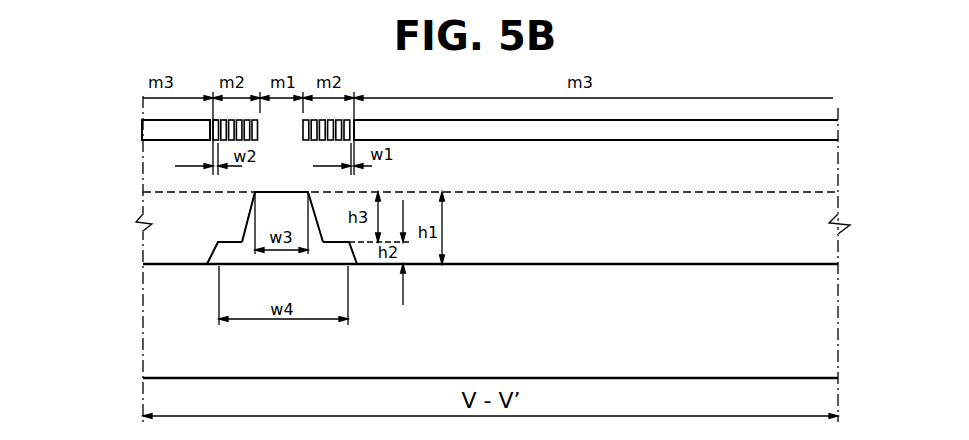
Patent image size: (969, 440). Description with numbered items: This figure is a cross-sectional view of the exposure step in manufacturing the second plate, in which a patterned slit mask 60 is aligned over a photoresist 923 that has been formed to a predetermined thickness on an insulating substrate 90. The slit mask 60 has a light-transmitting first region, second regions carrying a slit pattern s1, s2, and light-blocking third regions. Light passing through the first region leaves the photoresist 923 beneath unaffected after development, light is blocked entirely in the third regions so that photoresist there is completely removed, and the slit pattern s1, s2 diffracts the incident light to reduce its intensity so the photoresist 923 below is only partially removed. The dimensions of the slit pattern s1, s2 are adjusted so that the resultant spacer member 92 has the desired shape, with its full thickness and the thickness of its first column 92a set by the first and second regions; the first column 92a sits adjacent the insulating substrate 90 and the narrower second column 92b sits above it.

The slit mask 60 is at (828, 130).
The photoresist 923 is at (828, 204).
The spacer member 92 is at (194, 244).
The first column 92a is at (221, 252).
The second column 92b is at (252, 209).
The insulating substrate 90 is at (828, 353).
The slit pattern s1 is at (208, 128).
The slit pattern s2 is at (215, 120).